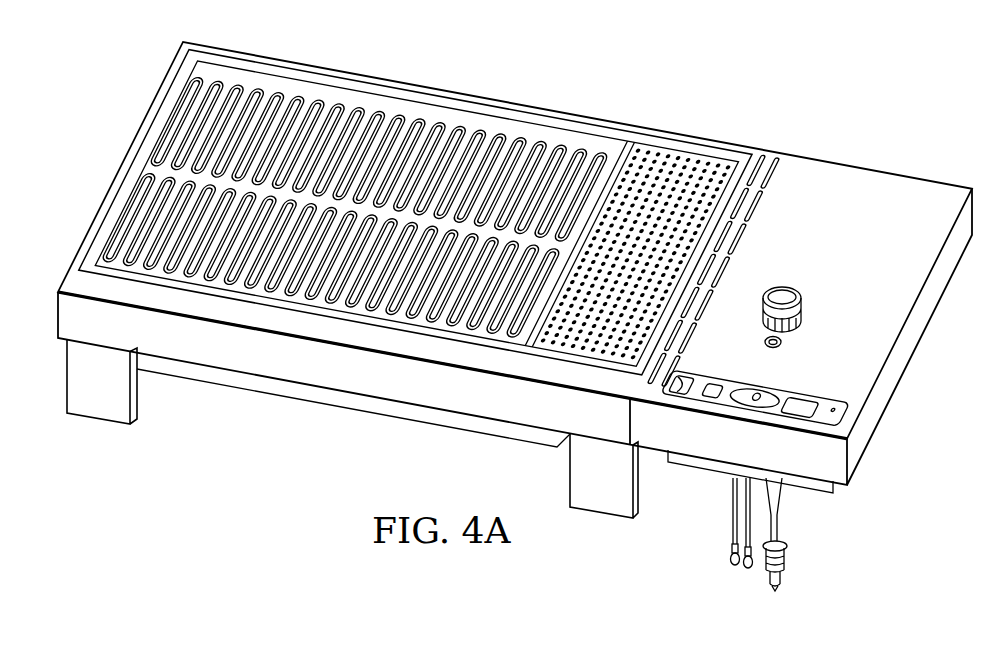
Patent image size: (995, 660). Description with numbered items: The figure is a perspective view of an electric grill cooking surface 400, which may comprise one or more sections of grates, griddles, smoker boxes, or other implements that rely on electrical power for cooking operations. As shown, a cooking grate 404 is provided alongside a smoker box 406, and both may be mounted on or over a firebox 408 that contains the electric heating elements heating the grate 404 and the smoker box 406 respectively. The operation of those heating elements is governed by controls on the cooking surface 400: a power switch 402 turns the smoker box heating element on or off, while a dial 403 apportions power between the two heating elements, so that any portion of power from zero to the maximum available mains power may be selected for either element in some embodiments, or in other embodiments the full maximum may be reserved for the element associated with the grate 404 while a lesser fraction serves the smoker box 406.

The electric grill cooking surface 400 is at (527, 101).
The power switch 402 is at (758, 392).
The dial 403 is at (788, 288).
The cooking grate 404 is at (372, 107).
The smoker box 406 is at (707, 162).
The firebox 408 is at (330, 370).